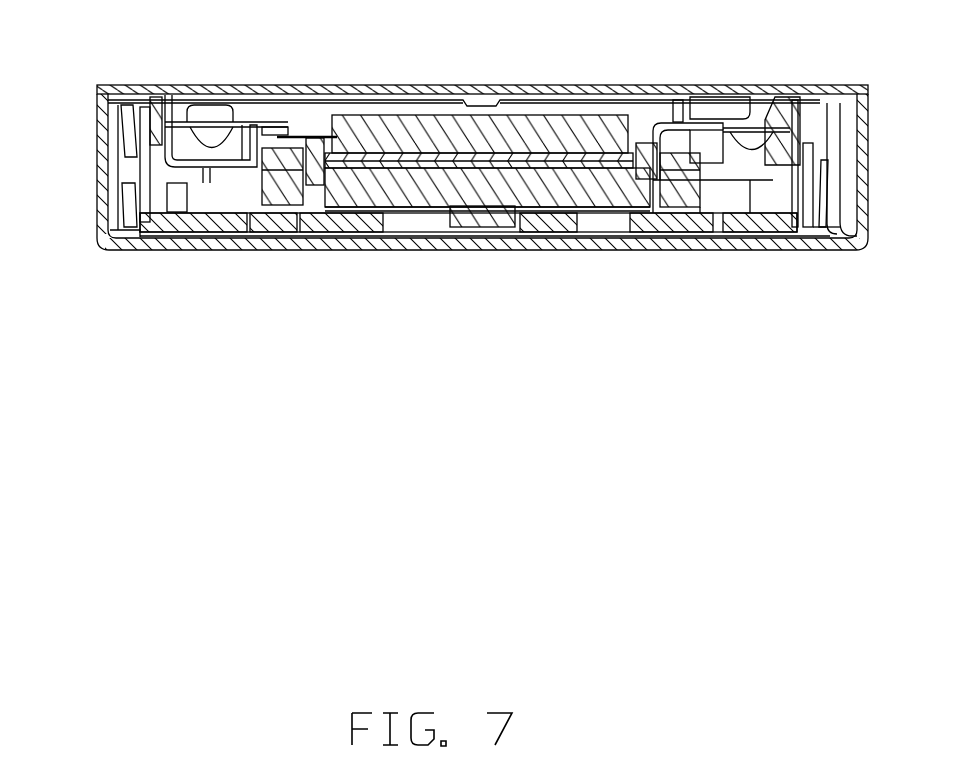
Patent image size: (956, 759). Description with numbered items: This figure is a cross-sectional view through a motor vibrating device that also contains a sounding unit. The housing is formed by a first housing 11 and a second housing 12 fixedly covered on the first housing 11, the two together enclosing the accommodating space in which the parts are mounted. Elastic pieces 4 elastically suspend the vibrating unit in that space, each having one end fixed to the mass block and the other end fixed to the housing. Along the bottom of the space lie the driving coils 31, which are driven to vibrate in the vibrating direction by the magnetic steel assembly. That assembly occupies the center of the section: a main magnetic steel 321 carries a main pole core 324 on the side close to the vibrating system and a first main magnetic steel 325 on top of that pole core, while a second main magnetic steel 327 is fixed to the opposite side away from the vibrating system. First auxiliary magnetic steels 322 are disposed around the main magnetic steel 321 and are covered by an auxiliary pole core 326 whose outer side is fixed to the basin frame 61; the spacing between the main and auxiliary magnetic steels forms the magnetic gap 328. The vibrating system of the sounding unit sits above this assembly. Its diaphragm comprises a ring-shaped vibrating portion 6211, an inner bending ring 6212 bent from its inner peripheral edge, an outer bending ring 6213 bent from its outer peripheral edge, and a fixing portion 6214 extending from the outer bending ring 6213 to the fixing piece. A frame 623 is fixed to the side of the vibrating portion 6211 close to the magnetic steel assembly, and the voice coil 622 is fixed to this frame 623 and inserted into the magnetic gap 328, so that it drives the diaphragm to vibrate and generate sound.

The first housing 11 is at (106, 132).
The second housing 12 is at (140, 92).
The elastic piece 4 is at (840, 238).
The driving coil 31 is at (360, 233).
The basin frame 61 is at (800, 132).
The main magnetic steel 321 is at (520, 193).
The first auxiliary magnetic steel 322 is at (687, 202).
The main pole core 324 is at (632, 205).
The first main magnetic steel 325 is at (463, 137).
The auxiliary pole core 326 is at (720, 170).
The second main magnetic steel 327 is at (472, 213).
The magnetic gap 328 is at (305, 210).
The voice coil 622 is at (316, 118).
The frame 623 is at (238, 113).
The vibrating portion 6211 is at (683, 125).
The inner bending ring 6212 is at (657, 118).
The outer bending ring 6213 is at (762, 125).
The fixing portion 6214 is at (792, 110).